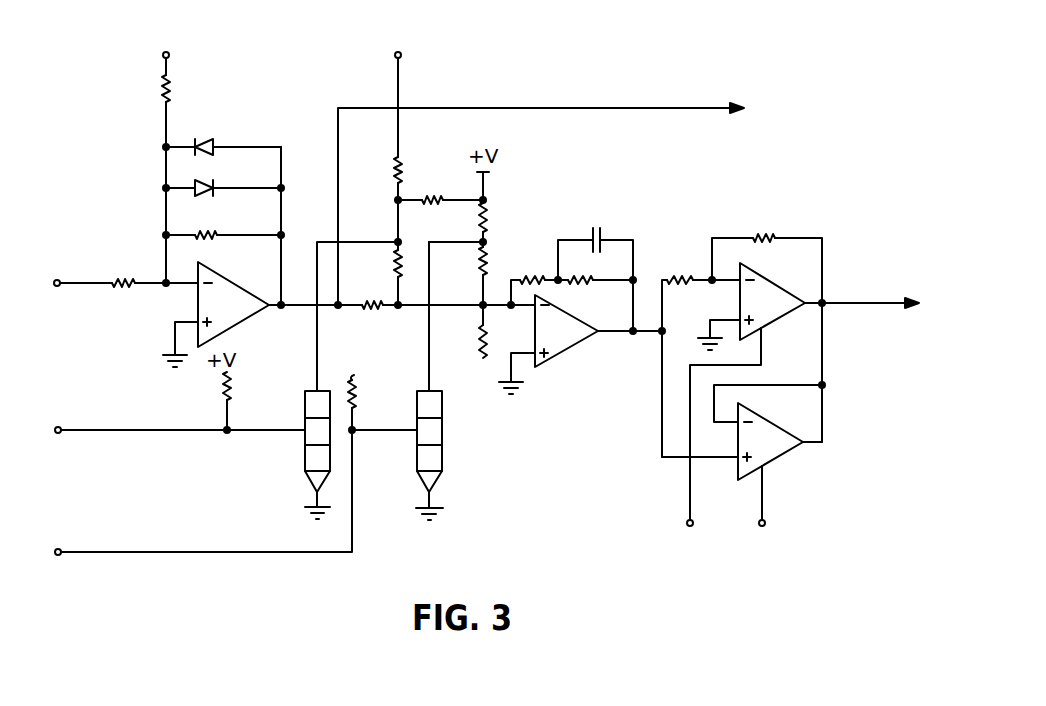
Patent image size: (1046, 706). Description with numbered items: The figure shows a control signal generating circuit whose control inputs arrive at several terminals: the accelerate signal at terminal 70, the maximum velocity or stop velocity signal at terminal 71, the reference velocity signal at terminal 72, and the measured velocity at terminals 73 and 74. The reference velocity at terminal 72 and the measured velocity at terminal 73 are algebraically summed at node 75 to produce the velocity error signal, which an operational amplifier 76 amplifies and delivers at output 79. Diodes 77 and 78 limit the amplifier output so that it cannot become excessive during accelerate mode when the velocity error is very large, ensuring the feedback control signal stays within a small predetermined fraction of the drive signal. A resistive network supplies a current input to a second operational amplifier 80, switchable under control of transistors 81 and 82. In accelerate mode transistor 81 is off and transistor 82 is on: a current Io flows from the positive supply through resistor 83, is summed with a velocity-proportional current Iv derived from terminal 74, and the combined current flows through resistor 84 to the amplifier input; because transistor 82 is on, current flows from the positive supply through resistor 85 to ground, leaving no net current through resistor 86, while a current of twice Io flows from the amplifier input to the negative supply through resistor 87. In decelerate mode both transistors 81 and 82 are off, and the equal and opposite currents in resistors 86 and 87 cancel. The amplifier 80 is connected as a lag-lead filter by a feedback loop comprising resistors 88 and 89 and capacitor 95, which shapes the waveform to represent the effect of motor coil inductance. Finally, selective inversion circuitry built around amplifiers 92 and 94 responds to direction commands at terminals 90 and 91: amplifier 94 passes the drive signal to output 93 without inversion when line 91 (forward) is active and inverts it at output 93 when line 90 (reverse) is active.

The terminal 70 is at (66, 536).
The terminal 71 is at (62, 414).
The terminal 72 is at (168, 52).
The terminal 73 is at (58, 282).
The terminal 74 is at (400, 52).
The node 75 is at (165, 290).
The operational amplifier 76 is at (232, 326).
The diode 77 is at (204, 140).
The diode 78 is at (208, 180).
The output 79 is at (296, 312).
The operational amplifier 80 is at (556, 352).
The transistor 81 is at (304, 454).
The transistor 82 is at (442, 460).
The resistor 83 is at (442, 196).
The resistor 84 is at (394, 262).
The resistor 85 is at (489, 214).
The resistor 86 is at (489, 262).
The resistor 87 is at (480, 350).
The resistor 88 is at (538, 278).
The resistor 89 is at (578, 284).
The terminal 90 is at (690, 528).
The terminal 91 is at (764, 528).
The amplifier 92 is at (762, 284).
The output 93 is at (910, 300).
The amplifier 94 is at (748, 476).
The capacitor 95 is at (600, 234).